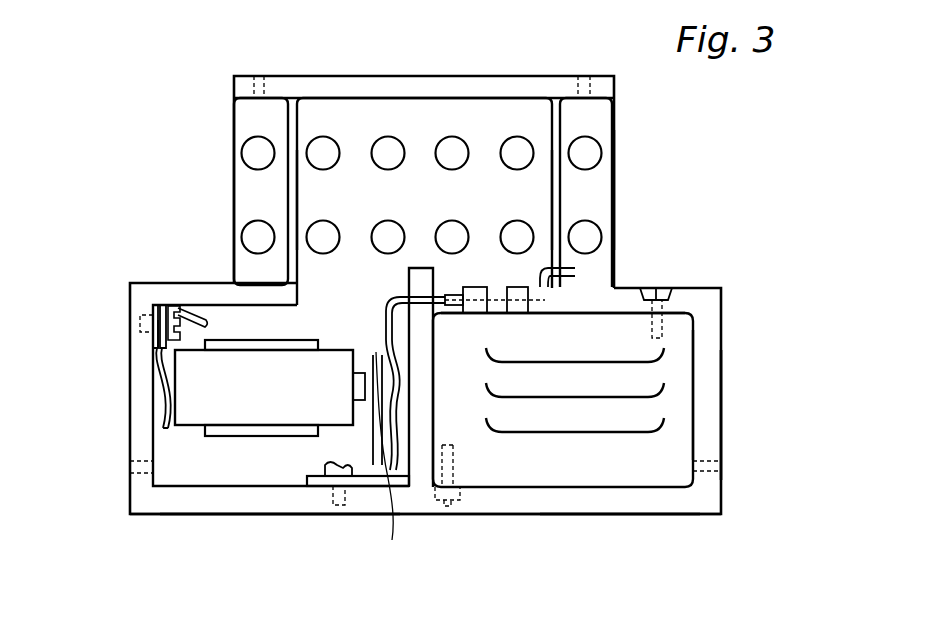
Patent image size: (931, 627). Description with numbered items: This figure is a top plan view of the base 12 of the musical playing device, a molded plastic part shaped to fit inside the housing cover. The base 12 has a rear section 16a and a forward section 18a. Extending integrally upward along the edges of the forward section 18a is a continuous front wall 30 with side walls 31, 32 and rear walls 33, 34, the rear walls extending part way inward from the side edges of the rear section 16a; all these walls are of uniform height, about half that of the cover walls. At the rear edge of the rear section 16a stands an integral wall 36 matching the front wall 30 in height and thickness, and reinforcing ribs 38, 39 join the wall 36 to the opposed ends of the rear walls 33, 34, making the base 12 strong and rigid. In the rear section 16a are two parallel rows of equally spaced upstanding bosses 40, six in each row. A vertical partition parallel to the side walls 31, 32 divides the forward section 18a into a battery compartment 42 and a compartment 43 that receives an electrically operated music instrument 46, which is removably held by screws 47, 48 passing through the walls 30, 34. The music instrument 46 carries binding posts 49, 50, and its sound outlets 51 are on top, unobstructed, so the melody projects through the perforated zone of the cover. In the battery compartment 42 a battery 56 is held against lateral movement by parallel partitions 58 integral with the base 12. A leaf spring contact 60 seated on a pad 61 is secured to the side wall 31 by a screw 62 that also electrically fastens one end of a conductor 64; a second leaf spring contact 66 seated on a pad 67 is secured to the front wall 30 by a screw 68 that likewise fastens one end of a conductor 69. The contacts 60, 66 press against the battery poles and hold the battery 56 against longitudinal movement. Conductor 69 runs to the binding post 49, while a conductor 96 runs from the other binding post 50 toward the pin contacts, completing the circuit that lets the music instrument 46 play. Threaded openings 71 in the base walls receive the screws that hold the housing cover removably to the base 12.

The base 12 is at (543, 518).
The rear section of the base 16a is at (614, 178).
The forward section of the base 18a is at (722, 378).
The front wall 30 is at (610, 503).
The side wall 31 is at (130, 400).
The side wall 32 is at (712, 425).
The rear wall 33 is at (193, 290).
The rear wall 34 is at (683, 288).
The upstanding wall 36 is at (478, 90).
The reinforcing rib 38 is at (297, 200).
The reinforcing rib 39 is at (552, 188).
The upstanding bosses 40 is at (450, 148).
The battery compartment 42 is at (210, 470).
The compartment 43 is at (492, 286).
The music instrument 46 is at (645, 455).
The screw 47 is at (455, 470).
The screw 48 is at (650, 325).
The binding post 49 is at (470, 287).
The binding post 50 is at (514, 287).
The sound outlets 51 is at (545, 365).
The battery 56 is at (320, 348).
The parallel partitions 58 is at (290, 340).
The leaf spring contact 60 is at (155, 420).
The pad 61 is at (153, 340).
The screw 62 is at (150, 317).
The conductor 64 is at (198, 326).
The leaf spring contact 66 is at (374, 355).
The pad 67 is at (327, 487).
The screw 68 is at (338, 465).
The conductor 69 is at (396, 460).
The threaded openings 71 is at (268, 92).
The conductor 96 is at (570, 265).